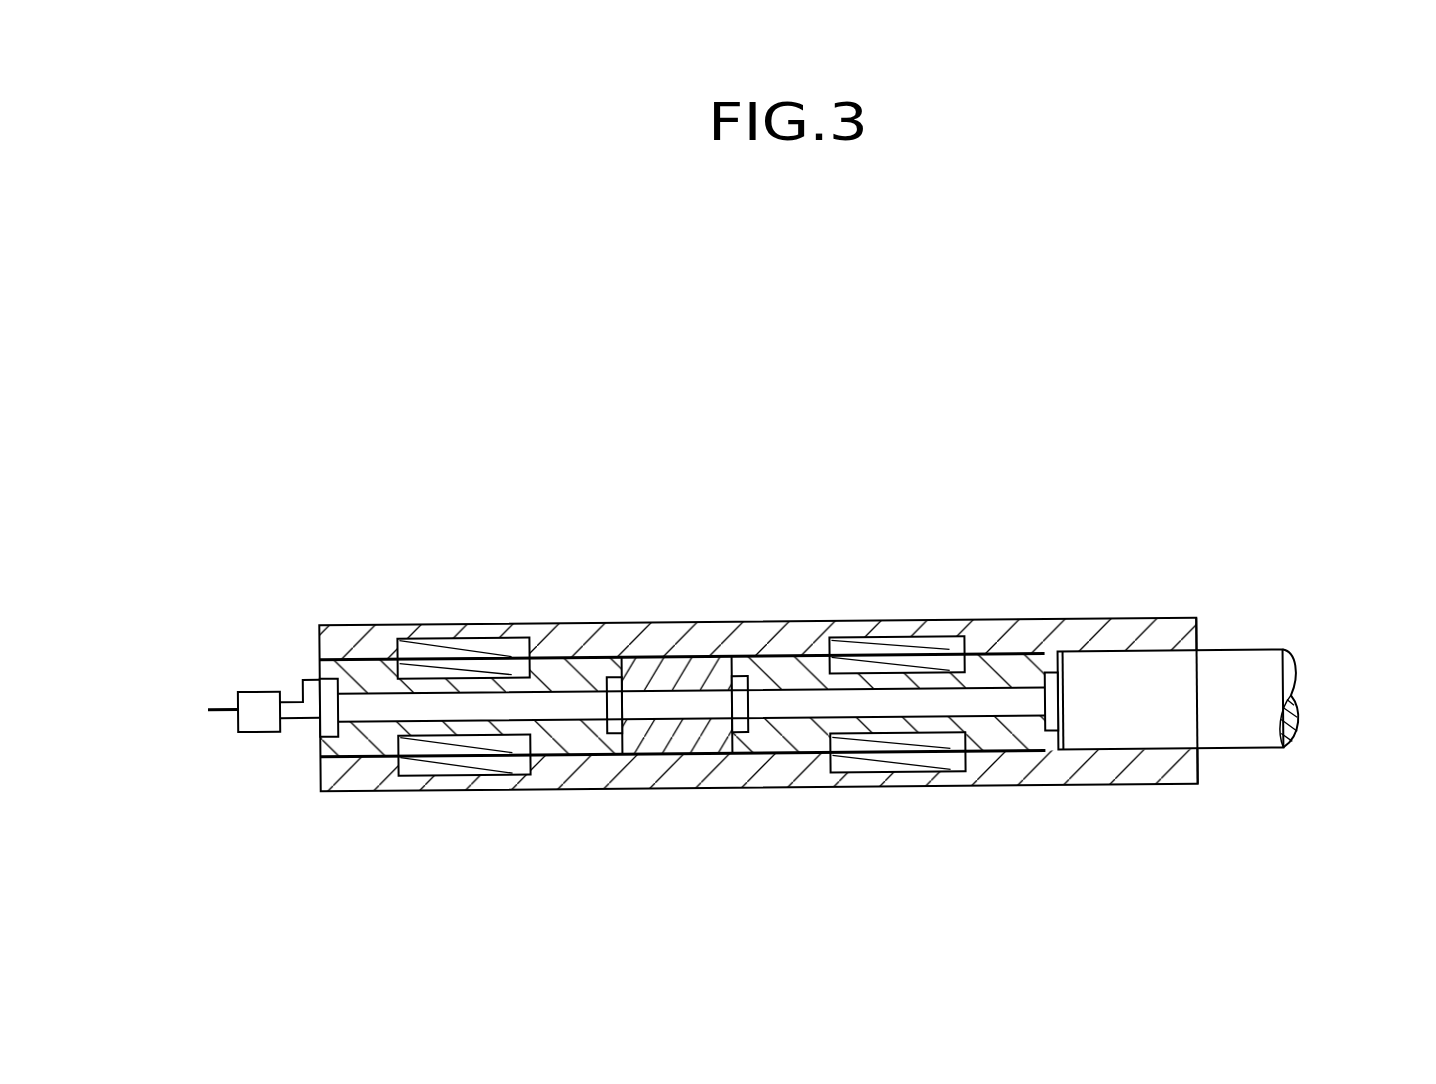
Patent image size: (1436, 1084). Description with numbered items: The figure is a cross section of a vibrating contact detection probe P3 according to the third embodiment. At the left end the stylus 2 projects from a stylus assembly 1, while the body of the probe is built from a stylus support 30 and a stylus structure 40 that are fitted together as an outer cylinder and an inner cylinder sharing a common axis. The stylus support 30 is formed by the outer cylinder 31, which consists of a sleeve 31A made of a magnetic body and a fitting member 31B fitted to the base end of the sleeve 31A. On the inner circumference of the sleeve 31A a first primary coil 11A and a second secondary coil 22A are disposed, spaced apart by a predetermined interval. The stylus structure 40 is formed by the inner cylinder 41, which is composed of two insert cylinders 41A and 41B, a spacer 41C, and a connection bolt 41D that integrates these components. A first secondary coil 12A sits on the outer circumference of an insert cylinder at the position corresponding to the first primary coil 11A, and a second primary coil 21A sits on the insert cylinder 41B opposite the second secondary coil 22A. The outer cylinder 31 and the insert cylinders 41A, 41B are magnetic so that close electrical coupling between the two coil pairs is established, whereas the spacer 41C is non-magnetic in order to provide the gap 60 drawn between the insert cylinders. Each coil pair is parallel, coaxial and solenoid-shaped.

The stylus assembly 1 is at (745, 749).
The stylus 2 is at (273, 708).
The first primary coil 11A is at (896, 654).
The first secondary coil 12A is at (897, 752).
The second primary coil 21A is at (464, 755).
The second secondary coil 22A is at (463, 658).
The stylus support 30 is at (1171, 701).
The outer cylinder 31 is at (1171, 701).
The sleeve 31A is at (1120, 701).
The fitting member 31B is at (1178, 699).
The stylus structure 40 is at (758, 705).
The inner cylinder 41 is at (758, 705).
The insert cylinder 41A is at (889, 704).
The insert cylinder 41B is at (471, 707).
The spacer 41C is at (678, 705).
The connection bolt 41D is at (691, 705).
The gap 60 is at (622, 788).
The vibrating contact detection probe P3 is at (1332, 447).